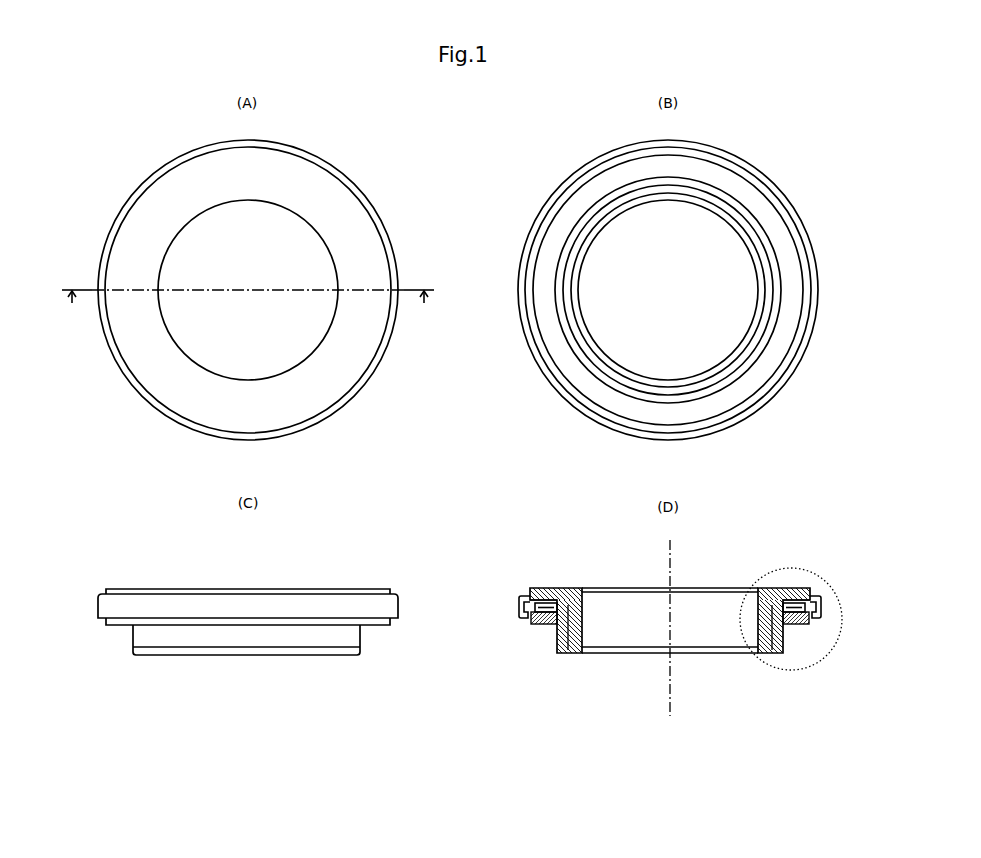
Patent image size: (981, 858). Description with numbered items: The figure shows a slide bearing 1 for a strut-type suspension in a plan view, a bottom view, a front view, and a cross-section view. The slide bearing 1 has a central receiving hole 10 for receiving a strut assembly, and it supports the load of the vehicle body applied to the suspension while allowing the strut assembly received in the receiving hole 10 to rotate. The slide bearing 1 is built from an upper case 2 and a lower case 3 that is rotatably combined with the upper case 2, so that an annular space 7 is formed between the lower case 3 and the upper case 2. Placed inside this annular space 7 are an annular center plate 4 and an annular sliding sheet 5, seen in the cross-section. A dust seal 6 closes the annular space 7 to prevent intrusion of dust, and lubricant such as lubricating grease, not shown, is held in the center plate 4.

The slide bearing 1 is at (393, 127).
The upper case 2 is at (280, 175).
The lower case 3 is at (707, 173).
The annular center plate 4 is at (547, 625).
The annular sliding sheet 5 is at (548, 590).
The dust seal 6 is at (533, 618).
The annular space 7 is at (518, 597).
The receiving hole 10 is at (304, 262).